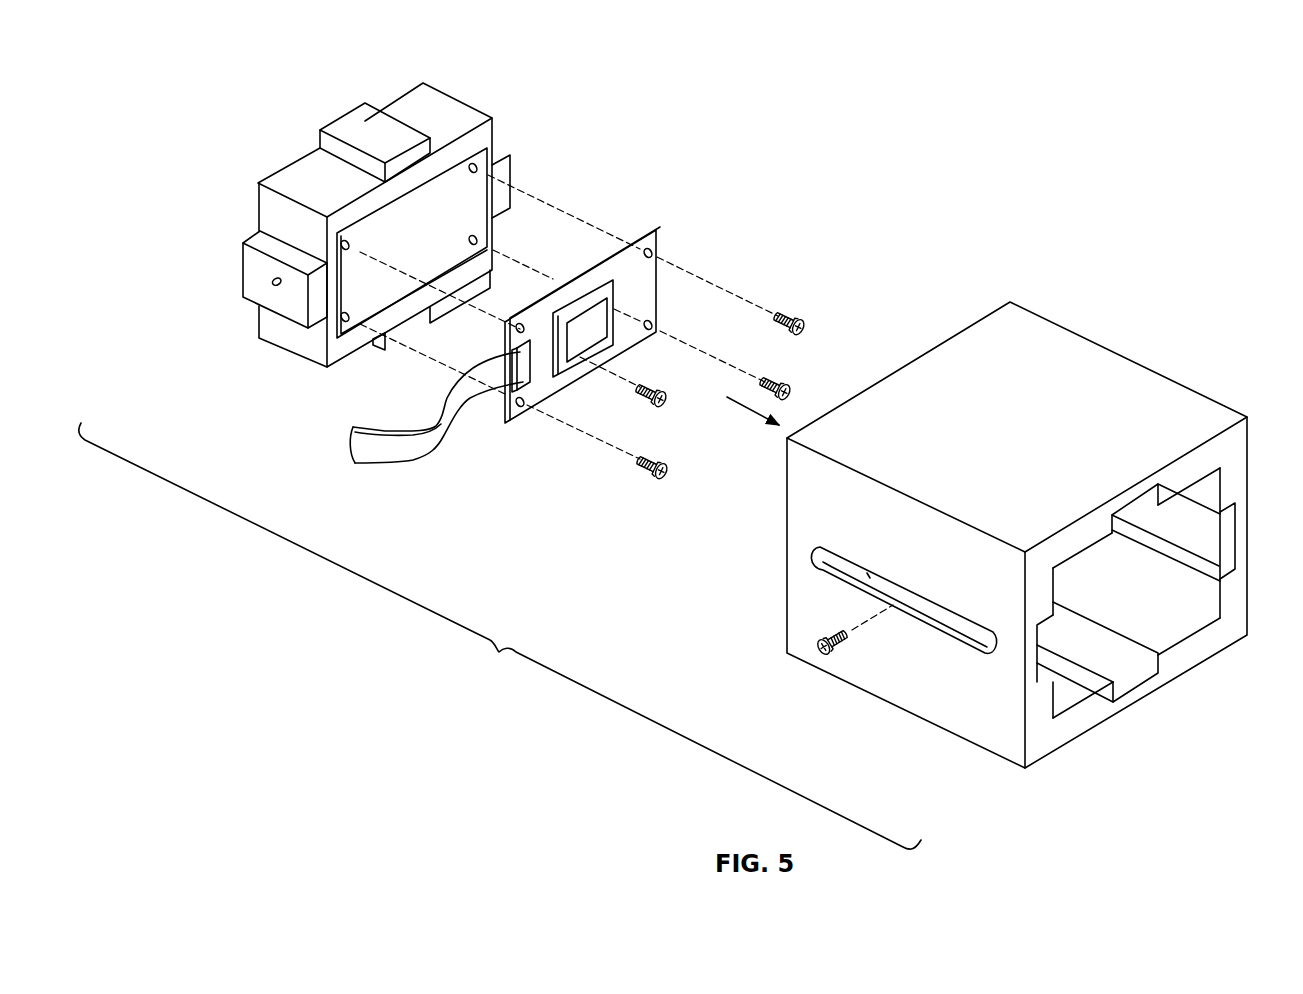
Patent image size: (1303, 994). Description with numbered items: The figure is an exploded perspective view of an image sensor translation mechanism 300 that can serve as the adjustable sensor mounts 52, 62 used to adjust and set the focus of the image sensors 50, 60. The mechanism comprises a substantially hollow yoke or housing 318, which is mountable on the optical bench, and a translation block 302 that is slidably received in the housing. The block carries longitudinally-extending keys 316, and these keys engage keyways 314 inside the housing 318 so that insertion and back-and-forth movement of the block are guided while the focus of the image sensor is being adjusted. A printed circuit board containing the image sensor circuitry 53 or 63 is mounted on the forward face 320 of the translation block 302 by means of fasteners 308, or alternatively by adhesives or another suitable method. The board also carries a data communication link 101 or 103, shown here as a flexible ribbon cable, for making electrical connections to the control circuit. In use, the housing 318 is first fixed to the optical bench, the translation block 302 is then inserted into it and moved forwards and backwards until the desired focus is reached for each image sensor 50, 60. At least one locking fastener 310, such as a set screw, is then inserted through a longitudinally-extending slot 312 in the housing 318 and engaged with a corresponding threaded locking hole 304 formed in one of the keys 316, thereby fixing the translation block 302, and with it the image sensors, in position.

The translation block 302 is at (352, 200).
The keys 316 is at (357, 118).
The threaded locking hole 304 is at (272, 284).
The forward face 320 is at (347, 297).
The PCB containing image sensor circuitry 53 is at (634, 308).
The PCB containing image sensor circuitry 63 is at (662, 223).
The image sensor 50 is at (629, 335).
The image sensor 60 is at (586, 335).
The data communication link 101 is at (391, 424).
The data communication link 103 is at (388, 472).
The fasteners 308 is at (648, 486).
The adjustable sensor mount 52 is at (1006, 409).
The adjustable sensor mount 62 is at (1006, 409).
The housing 318 is at (1095, 336).
The keyways 314 is at (1228, 557).
The slot 312 is at (957, 628).
The locking fastener 310 is at (806, 650).
The image sensor translation mechanism 300 is at (500, 636).